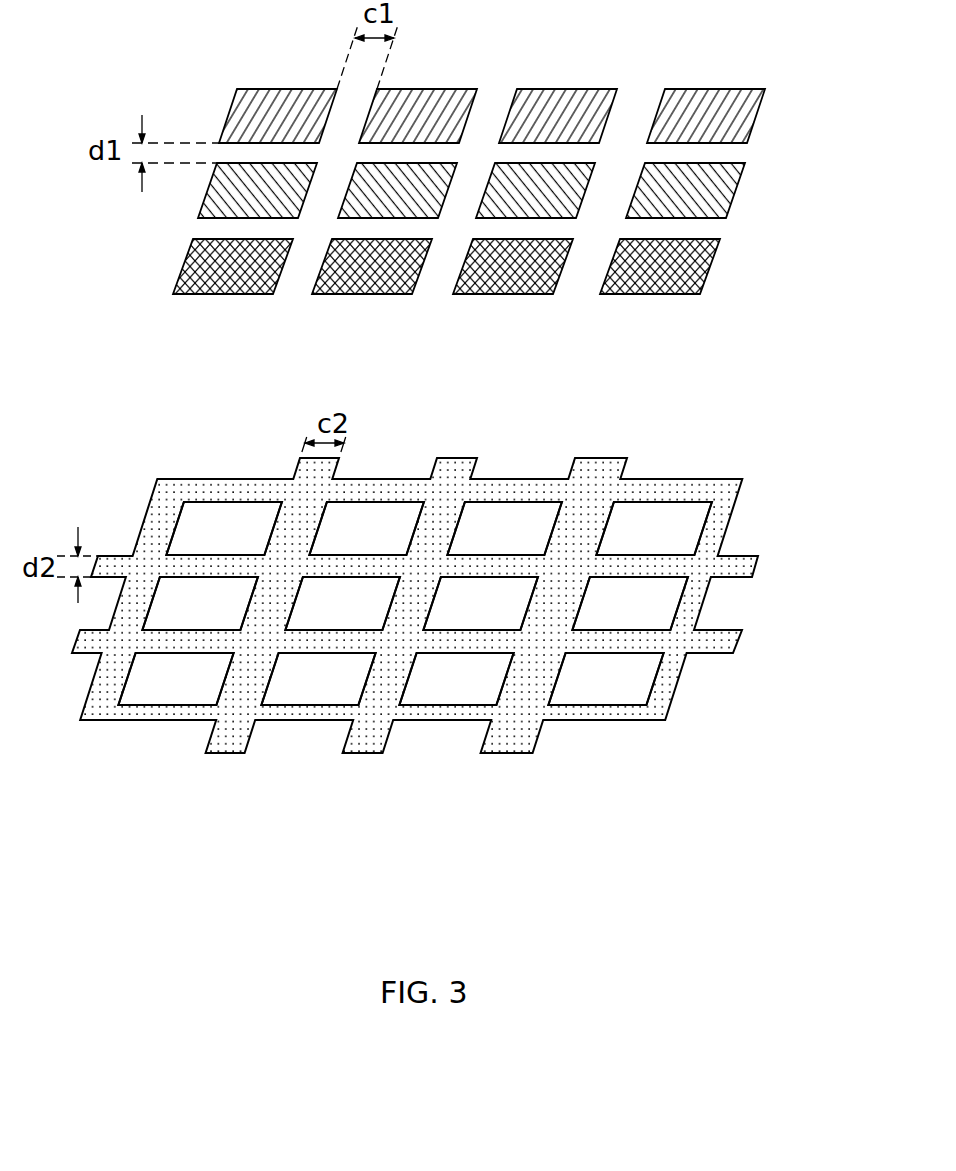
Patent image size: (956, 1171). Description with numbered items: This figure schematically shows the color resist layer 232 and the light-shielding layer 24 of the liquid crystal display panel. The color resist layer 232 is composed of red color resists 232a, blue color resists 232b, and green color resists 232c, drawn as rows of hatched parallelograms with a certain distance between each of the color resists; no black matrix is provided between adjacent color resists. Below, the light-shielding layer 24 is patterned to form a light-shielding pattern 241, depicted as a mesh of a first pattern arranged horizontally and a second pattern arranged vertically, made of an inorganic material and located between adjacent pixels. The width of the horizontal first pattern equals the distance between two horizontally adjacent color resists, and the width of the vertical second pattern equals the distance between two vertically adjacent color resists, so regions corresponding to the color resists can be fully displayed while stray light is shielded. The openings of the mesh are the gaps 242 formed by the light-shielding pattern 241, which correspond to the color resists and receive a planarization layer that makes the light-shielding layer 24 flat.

The red color resists 232a is at (745, 122).
The blue color resists 232b is at (720, 197).
The green color resists 232c is at (700, 273).
The color resist layer 232 is at (473, 513).
The light-shielding pattern 241 is at (722, 490).
The gaps 242 is at (679, 600).
The light-shielding layer 24 is at (450, 698).